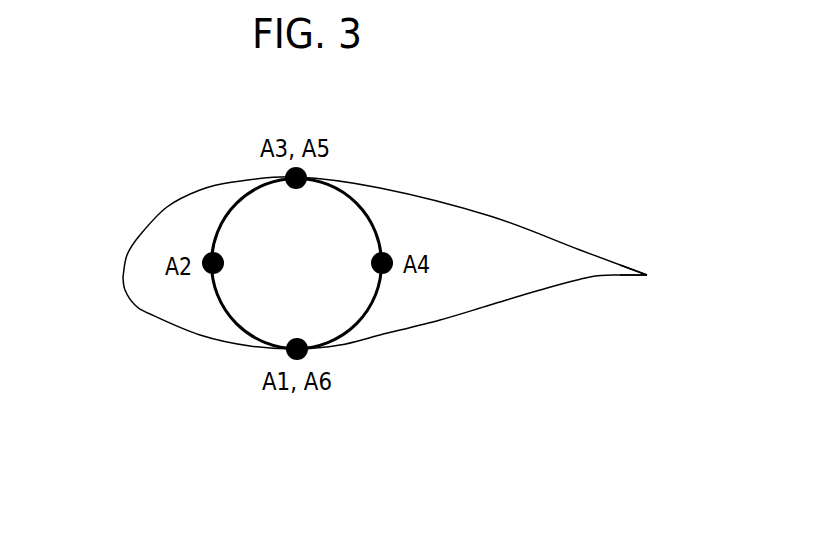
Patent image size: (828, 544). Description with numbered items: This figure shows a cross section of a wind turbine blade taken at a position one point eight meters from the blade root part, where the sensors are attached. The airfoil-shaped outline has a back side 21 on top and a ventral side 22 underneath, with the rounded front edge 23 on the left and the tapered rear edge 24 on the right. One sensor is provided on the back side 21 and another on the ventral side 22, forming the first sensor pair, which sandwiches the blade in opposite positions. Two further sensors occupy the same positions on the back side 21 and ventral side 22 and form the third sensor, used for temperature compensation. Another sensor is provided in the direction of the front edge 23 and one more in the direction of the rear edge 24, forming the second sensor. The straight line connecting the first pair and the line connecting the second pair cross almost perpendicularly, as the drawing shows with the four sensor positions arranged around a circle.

The back side 21 is at (468, 176).
The ventral side 22 is at (233, 397).
The front edge 23 is at (113, 307).
The rear edge 24 is at (647, 299).